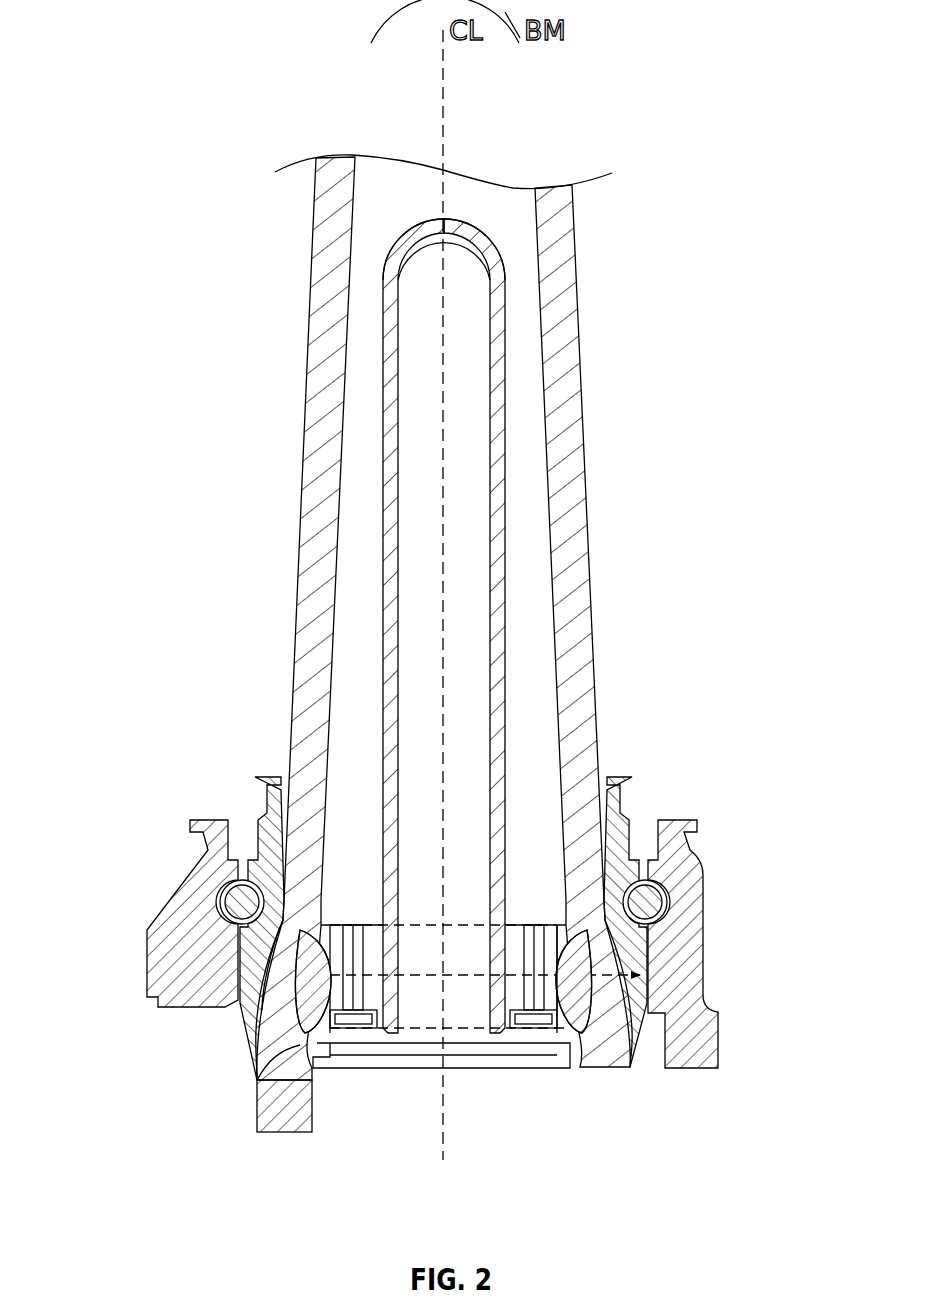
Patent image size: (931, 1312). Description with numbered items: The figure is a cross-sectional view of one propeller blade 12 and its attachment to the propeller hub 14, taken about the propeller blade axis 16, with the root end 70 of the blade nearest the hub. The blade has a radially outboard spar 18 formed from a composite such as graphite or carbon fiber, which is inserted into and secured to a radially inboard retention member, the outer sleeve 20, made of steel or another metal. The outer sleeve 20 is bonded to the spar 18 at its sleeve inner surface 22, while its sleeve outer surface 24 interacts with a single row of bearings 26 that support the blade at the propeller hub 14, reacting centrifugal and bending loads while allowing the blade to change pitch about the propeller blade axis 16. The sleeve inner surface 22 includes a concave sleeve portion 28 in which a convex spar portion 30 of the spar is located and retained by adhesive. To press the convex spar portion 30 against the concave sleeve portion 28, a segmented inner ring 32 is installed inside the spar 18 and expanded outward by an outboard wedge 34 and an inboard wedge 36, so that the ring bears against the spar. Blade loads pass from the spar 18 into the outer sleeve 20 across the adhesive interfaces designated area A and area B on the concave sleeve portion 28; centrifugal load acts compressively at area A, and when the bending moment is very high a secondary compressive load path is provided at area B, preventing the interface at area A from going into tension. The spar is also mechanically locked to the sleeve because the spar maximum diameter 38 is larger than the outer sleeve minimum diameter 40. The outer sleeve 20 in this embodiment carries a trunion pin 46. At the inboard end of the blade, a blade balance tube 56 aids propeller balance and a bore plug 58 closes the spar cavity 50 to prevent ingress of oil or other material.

The propeller blade 12 is at (125, 156).
The propeller hub 14 is at (155, 946).
The propeller blade axis 16 is at (445, 92).
The spar 18 is at (590, 592).
The outer sleeve 20 is at (266, 818).
The sleeve inner surface 22 is at (287, 1022).
The sleeve outer surface 24 is at (237, 985).
The bearings 26 is at (232, 896).
The concave sleeve portion 28 is at (265, 1003).
The convex spar portion 30 is at (290, 1050).
The segmented inner ring 32 is at (652, 945).
The outboard wedge 34 is at (556, 925).
The inboard wedge 36 is at (688, 1068).
The spar maximum diameter 38 is at (642, 985).
The outer sleeve minimum diameter 40 is at (268, 926).
The trunion pin 46 is at (314, 1118).
The spar cavity 50 is at (366, 877).
The blade balance tube 56 is at (503, 413).
The bore plug 58 is at (387, 1068).
The root end 70 is at (228, 759).
The area A is at (666, 896).
The area B is at (688, 1010).